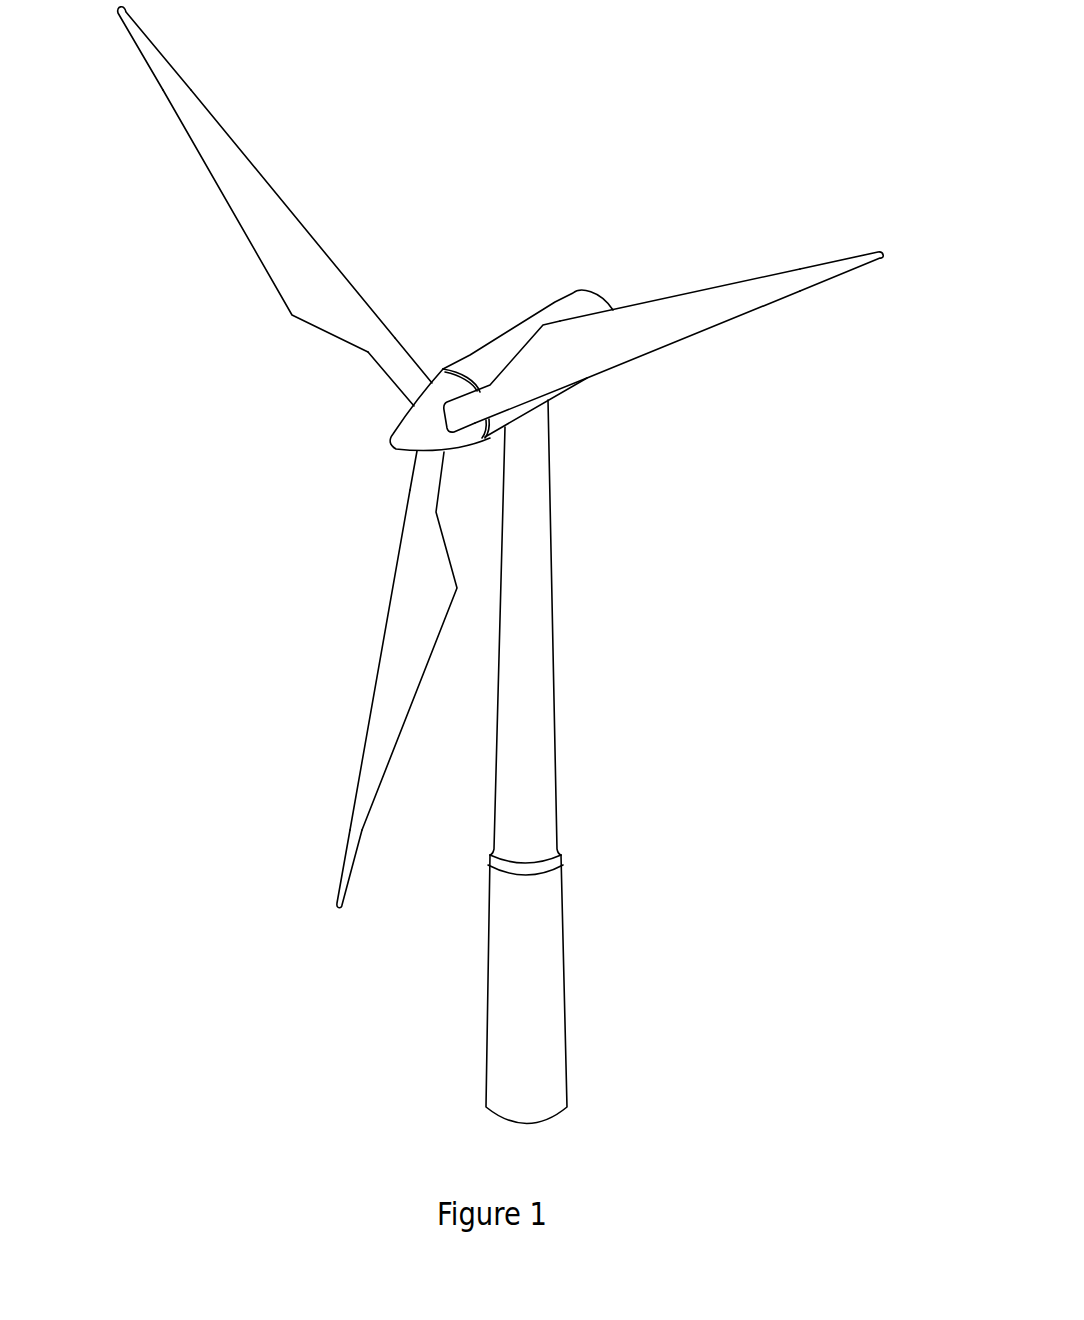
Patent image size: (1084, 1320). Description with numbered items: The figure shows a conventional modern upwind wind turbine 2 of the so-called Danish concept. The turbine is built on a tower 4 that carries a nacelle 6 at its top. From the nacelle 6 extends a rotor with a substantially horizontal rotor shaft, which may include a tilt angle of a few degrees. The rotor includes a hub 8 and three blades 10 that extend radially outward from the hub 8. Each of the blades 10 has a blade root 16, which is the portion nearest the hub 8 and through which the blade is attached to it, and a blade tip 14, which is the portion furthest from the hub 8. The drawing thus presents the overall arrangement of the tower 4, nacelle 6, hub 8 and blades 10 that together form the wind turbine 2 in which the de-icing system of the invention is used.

The wind turbine 2 is at (581, 723).
The tower 4 is at (543, 600).
The nacelle 6 is at (505, 340).
The hub 8 is at (386, 437).
The blade 10 is at (285, 277).
The blade tip 14 is at (150, 60).
The blade root 16 is at (407, 383).